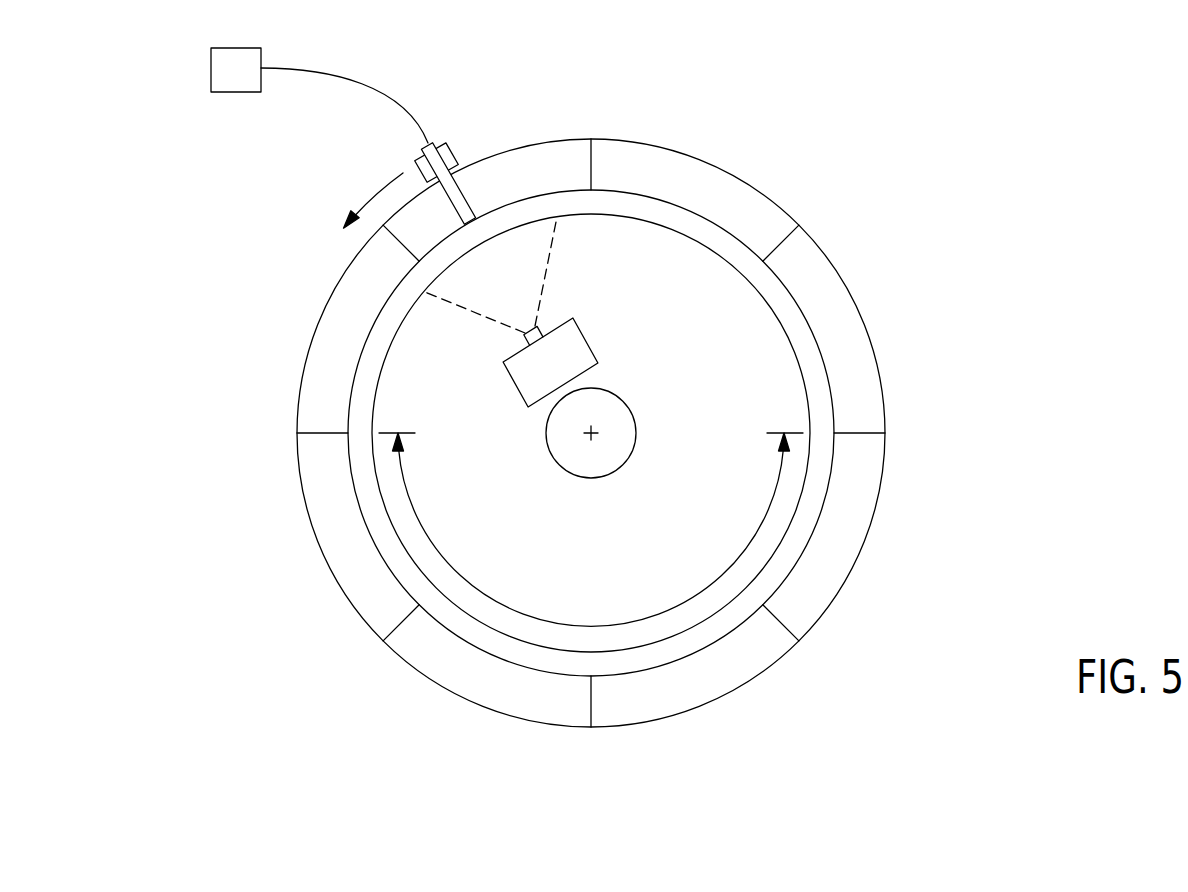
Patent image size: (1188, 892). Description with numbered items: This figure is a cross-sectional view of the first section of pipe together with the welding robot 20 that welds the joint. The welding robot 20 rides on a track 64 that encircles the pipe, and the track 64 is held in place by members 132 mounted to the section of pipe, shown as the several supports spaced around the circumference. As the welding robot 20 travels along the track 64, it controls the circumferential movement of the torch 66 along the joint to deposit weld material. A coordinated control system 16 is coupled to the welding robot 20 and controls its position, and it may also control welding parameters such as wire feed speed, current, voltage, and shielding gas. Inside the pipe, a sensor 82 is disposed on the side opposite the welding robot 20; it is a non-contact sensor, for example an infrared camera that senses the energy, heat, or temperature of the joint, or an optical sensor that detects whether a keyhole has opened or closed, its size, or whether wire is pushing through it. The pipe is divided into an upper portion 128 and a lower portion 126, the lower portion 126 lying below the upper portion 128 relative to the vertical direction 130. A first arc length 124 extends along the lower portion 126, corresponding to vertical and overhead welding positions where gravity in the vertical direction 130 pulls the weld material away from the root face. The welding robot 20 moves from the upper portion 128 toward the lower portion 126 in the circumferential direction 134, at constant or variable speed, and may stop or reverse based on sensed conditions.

The coordinated control system 16 is at (319, 95).
The welding robot 20 is at (455, 152).
The track 64 is at (563, 138).
The torch 66 is at (436, 145).
The sensor 82 is at (586, 338).
The first arc length 124 is at (592, 625).
The lower portion 126 is at (702, 668).
The upper portion 128 is at (690, 192).
The vertical direction 130 is at (170, 305).
The members 132 is at (593, 163).
The circumferential direction 134 is at (373, 194).